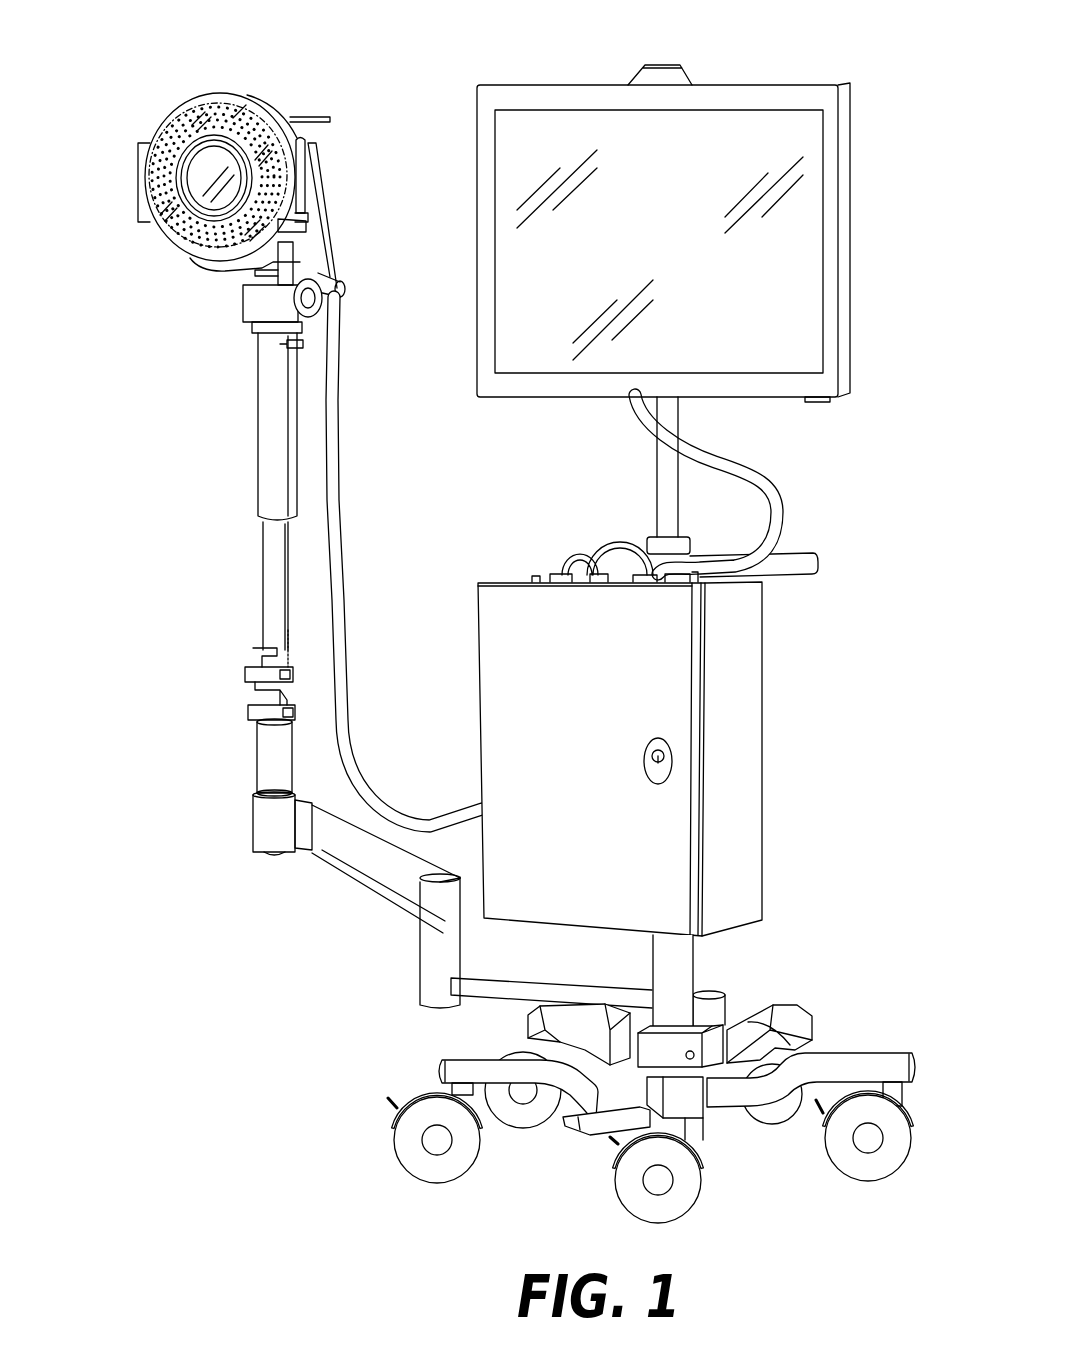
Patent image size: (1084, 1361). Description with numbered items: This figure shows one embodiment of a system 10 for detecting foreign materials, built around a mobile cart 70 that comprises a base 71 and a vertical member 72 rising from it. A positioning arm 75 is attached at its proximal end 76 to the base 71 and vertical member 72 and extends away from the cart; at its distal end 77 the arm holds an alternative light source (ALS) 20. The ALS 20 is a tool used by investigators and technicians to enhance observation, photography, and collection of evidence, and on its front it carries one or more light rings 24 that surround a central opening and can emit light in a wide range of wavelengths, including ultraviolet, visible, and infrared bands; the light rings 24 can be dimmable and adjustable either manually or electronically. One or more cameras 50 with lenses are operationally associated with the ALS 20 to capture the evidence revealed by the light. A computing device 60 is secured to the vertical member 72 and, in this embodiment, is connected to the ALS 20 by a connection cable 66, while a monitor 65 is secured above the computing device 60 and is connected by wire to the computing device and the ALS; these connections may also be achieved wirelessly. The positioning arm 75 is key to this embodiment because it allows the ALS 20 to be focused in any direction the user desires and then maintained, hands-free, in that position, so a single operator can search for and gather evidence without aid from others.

The system 10 is at (499, 612).
The alternative light source (ALS) 20 is at (170, 128).
The light rings 24 is at (205, 257).
The camera 50 is at (300, 160).
The distal end 77 is at (263, 300).
The connection cable 66 is at (335, 398).
The positioning arm 75 is at (267, 545).
The proximal end 76 is at (440, 915).
The monitor 65 is at (810, 125).
The computing device 60 is at (649, 816).
The vertical member 72 is at (675, 972).
The base 71 is at (733, 1077).
The mobile cart 70 is at (572, 1110).